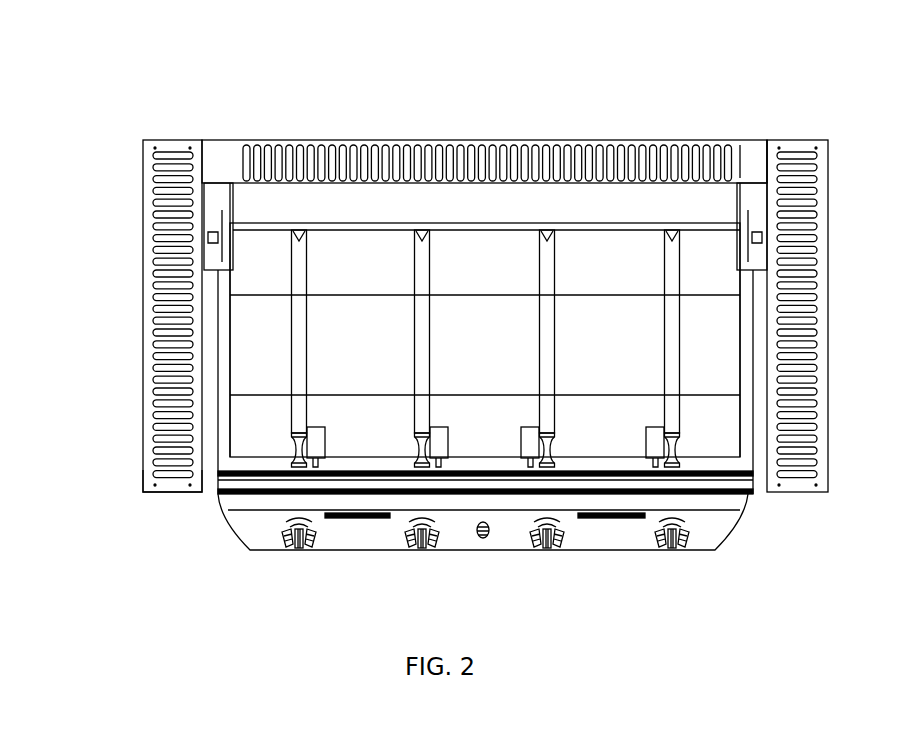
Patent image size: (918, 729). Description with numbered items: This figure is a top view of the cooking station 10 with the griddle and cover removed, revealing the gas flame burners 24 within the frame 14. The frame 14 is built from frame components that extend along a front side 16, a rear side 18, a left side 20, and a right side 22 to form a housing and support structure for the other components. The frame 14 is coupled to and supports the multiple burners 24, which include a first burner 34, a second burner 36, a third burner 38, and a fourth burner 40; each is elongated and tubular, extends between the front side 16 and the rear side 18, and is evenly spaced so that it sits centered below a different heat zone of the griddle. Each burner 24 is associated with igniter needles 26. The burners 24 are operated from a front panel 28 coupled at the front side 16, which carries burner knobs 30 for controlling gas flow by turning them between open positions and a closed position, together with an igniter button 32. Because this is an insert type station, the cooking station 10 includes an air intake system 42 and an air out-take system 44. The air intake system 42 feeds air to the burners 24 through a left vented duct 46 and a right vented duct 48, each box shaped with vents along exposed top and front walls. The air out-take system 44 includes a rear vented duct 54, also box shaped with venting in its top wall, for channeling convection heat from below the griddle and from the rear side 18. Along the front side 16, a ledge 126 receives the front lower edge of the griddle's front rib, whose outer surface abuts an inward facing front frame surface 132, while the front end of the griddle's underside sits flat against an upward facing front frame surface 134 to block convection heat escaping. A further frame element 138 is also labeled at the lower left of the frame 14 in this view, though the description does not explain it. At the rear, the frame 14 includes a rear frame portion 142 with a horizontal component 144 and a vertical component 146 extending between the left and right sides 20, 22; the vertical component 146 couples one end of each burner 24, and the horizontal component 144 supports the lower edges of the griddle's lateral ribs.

The cooking station 10 is at (120, 70).
The frame 14 is at (236, 363).
The front side 16 is at (580, 558).
The rear side 18 is at (650, 128).
The left side 20 is at (135, 248).
The right side 22 is at (843, 298).
The gas flame burners 24 is at (486, 348).
The igniter needles 26 is at (326, 436).
The front panel 28 is at (352, 540).
The burner knobs 30 is at (290, 545).
The igniter button 32 is at (483, 545).
The first burner 34 is at (302, 262).
The second burner 36 is at (432, 338).
The third burner 38 is at (548, 326).
The fourth burner 40 is at (668, 365).
The air intake system 42 is at (138, 461).
The air out-take system 44 is at (297, 138).
The left vented duct 46 is at (150, 418).
The right vented duct 48 is at (823, 390).
The rear vented duct 54 is at (742, 155).
The ledge 126 is at (697, 470).
The inward facing front frame surface 132 is at (603, 470).
The upward facing front frame surface 134 is at (722, 490).
The left side support 138 is at (222, 455).
The rear frame portion 142 is at (346, 208).
The horizontal component 144 is at (468, 208).
The vertical component 146 is at (580, 228).